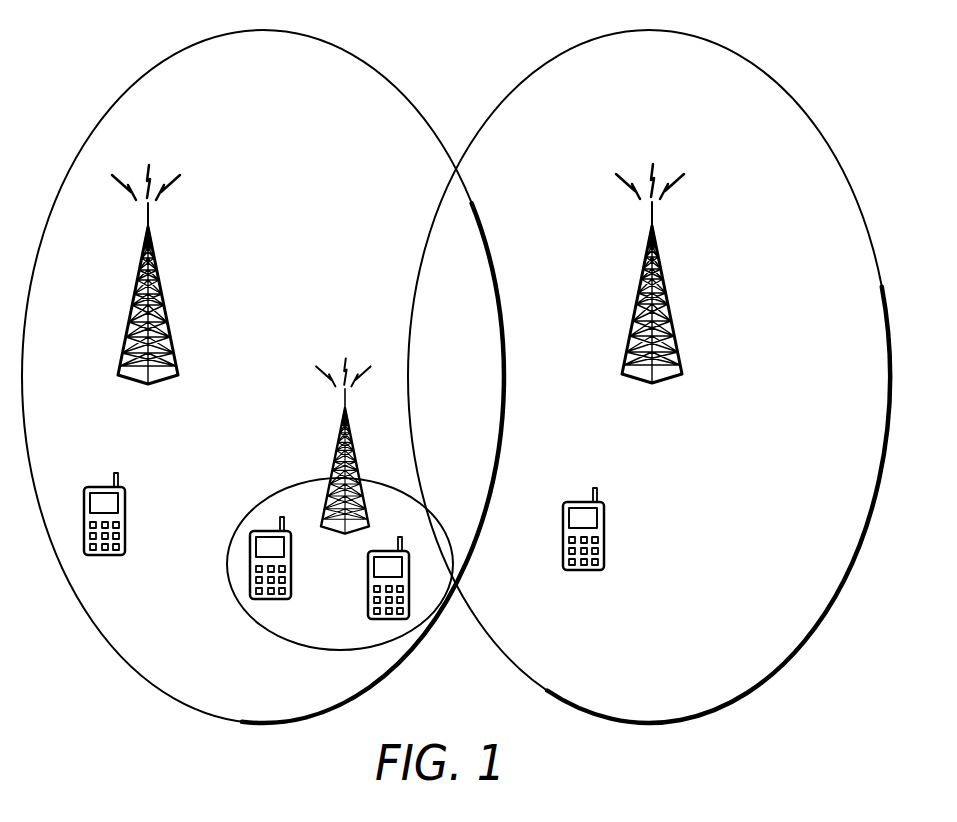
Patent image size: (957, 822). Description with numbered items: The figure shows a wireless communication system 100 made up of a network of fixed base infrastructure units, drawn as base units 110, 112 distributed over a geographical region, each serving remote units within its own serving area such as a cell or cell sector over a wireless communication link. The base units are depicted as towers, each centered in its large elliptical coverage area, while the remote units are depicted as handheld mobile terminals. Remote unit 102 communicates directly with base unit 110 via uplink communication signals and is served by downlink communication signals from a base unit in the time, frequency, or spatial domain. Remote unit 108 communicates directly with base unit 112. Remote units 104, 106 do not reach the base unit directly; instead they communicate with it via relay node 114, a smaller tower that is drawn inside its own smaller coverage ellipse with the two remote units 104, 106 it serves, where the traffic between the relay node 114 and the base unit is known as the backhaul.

The wireless communication system 100 is at (844, 31).
The remote unit 102 is at (127, 522).
The remote unit 104 is at (293, 566).
The remote unit 106 is at (367, 598).
The remote unit 108 is at (605, 536).
The base unit 110 is at (164, 296).
The base unit 112 is at (668, 296).
The relay node 114 is at (335, 445).